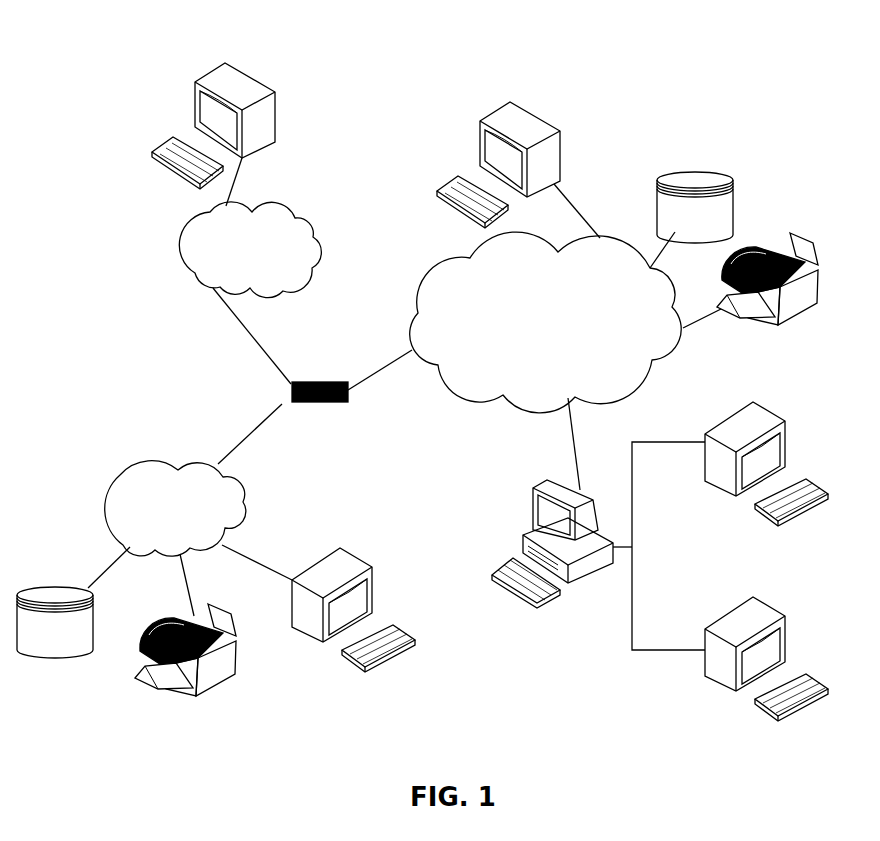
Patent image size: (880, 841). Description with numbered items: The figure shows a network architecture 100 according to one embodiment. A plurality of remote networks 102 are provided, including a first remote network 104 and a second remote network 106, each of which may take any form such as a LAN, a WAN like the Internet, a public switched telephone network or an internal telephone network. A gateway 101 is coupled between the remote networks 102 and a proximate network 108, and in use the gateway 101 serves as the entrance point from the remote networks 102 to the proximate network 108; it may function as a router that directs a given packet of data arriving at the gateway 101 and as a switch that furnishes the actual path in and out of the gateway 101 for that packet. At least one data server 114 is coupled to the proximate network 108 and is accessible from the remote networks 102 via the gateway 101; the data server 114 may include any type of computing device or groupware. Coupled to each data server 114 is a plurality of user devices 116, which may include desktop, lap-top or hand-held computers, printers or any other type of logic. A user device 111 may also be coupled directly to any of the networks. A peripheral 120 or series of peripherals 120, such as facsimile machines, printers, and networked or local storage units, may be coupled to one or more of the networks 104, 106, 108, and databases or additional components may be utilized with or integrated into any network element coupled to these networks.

The architecture 100 is at (122, 42).
The gateway 101 is at (310, 380).
The remote networks 102 is at (148, 306).
The first remote network 104 is at (110, 483).
The second remote network 106 is at (311, 224).
The proximate network 108 is at (648, 384).
The user device 111 is at (560, 132).
The data server 114 is at (532, 503).
The user devices 116 is at (277, 101).
The peripheral 120 is at (56, 651).